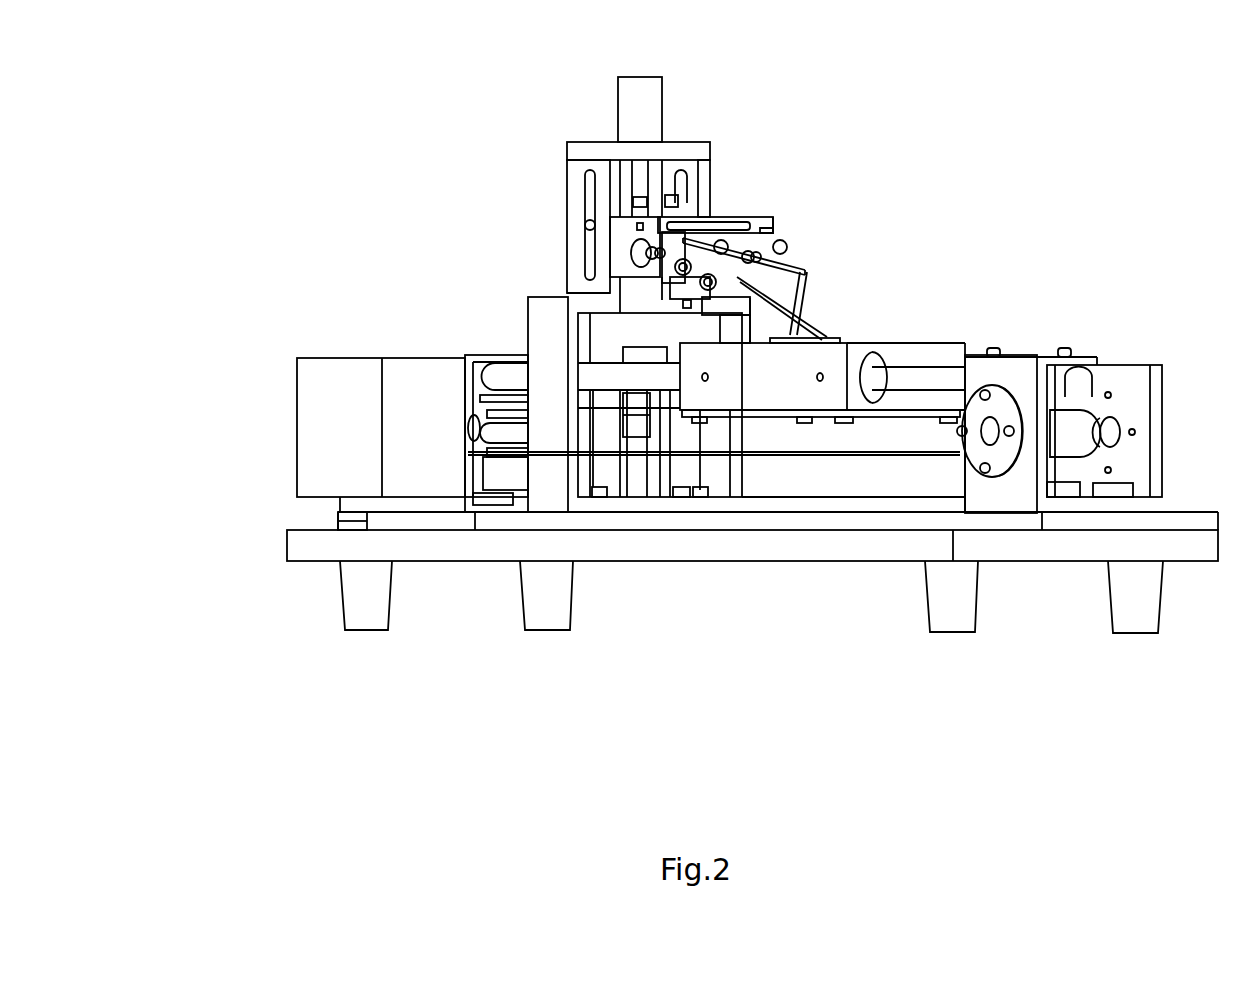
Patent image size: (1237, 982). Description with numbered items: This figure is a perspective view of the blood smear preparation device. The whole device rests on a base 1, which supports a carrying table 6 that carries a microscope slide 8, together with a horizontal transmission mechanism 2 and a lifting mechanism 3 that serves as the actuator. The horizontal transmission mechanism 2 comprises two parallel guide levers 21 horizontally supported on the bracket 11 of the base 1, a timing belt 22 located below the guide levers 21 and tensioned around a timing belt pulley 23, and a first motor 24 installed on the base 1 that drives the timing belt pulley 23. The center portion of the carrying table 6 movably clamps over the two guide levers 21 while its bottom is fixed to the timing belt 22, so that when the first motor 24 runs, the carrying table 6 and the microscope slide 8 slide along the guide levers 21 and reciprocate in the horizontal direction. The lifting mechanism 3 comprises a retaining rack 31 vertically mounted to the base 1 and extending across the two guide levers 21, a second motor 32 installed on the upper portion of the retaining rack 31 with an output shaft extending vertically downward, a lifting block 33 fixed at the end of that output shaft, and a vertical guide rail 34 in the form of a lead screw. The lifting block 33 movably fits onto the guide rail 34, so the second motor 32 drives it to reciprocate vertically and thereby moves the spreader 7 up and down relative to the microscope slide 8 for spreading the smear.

The base 1 is at (722, 547).
The horizontal transmission mechanism 2 is at (897, 460).
The lifting mechanism 3 is at (533, 258).
The carrying table 6 is at (820, 340).
The spreader 7 is at (792, 307).
The microscope slide 8 is at (795, 335).
The bracket 11 is at (463, 352).
The guide levers 21 is at (916, 384).
The timing belt 22 is at (687, 450).
The timing belt pulley 23 is at (1065, 432).
The first motor 24 is at (325, 435).
The retaining rack 31 is at (577, 215).
The second motor 32 is at (640, 108).
The lifting block 33 is at (630, 243).
The vertical guide rail 34 is at (657, 178).